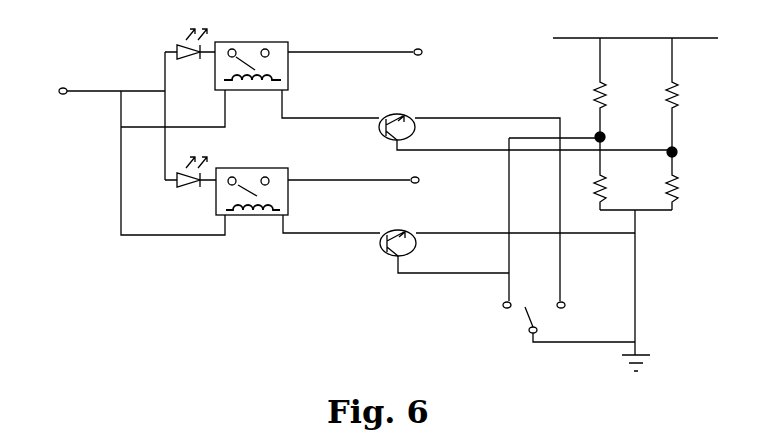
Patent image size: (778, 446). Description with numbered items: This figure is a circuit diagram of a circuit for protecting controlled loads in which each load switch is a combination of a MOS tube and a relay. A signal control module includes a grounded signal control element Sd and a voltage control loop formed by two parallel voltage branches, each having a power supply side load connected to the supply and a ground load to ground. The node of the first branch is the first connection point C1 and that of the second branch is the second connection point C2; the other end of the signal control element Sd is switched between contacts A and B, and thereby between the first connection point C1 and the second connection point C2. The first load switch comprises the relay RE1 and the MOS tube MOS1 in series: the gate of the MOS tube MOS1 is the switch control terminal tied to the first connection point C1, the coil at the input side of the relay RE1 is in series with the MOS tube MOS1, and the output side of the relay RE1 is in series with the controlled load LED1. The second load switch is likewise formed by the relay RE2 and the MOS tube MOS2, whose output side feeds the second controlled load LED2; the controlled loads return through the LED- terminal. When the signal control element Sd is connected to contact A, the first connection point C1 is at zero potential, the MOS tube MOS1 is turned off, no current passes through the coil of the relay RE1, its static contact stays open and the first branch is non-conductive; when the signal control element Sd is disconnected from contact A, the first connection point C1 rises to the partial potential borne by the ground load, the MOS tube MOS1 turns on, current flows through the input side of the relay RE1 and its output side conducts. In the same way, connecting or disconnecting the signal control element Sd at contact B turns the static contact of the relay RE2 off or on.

The LED negative terminal LED- is at (355, 105).
The controlled load LED1 is at (190, 183).
The second light emitting diode LED2 is at (173, 44).
The relay RE1 is at (252, 212).
The relay RE2 is at (251, 56).
The MOS tube MOS1 is at (379, 257).
The second transistor MOS2 is at (395, 116).
The first connection point C1 is at (611, 124).
The second connection point C2 is at (683, 124).
The contact A is at (497, 304).
The contact B is at (571, 309).
The signal control element Sd is at (570, 333).